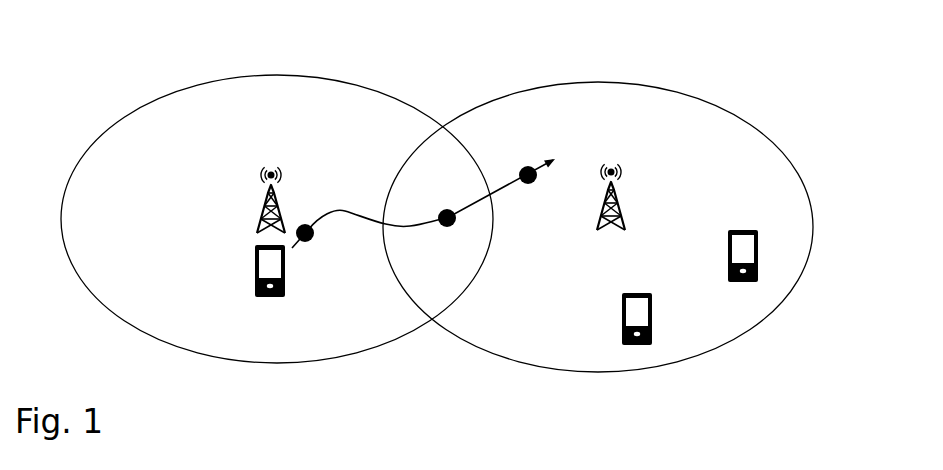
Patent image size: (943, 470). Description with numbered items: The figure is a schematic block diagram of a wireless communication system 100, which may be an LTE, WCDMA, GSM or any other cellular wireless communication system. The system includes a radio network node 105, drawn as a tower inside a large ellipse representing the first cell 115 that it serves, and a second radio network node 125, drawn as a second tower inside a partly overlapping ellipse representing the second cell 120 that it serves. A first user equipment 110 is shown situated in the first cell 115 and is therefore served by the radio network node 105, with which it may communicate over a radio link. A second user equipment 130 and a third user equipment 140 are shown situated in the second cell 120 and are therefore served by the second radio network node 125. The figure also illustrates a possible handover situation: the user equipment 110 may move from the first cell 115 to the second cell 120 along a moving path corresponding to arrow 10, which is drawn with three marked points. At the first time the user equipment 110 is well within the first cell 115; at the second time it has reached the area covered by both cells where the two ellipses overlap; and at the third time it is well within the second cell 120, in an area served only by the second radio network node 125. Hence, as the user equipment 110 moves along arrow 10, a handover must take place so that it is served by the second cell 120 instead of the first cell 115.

The wireless communication system 100 is at (352, 65).
The arrow 10 is at (505, 175).
The radio network node 105 is at (262, 148).
The first user equipment 110 is at (250, 292).
The first cell 115 is at (117, 145).
The second cell 120 is at (632, 127).
The second radio network node 125 is at (632, 168).
The second user equipment 130 is at (658, 307).
The third user equipment 140 is at (768, 248).